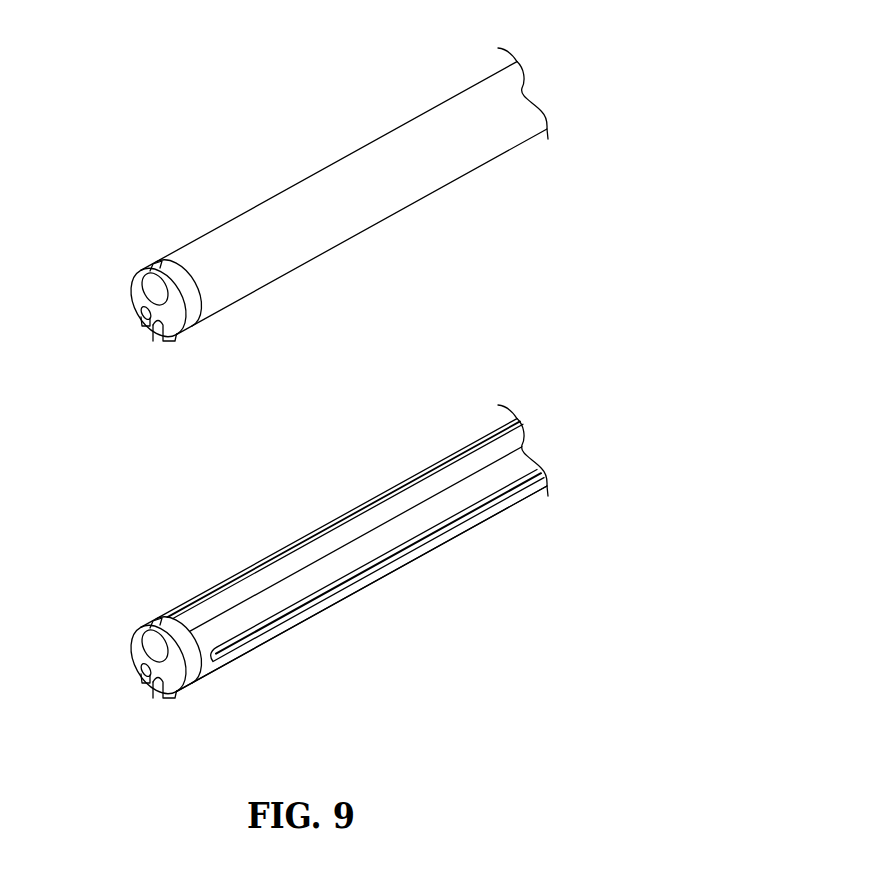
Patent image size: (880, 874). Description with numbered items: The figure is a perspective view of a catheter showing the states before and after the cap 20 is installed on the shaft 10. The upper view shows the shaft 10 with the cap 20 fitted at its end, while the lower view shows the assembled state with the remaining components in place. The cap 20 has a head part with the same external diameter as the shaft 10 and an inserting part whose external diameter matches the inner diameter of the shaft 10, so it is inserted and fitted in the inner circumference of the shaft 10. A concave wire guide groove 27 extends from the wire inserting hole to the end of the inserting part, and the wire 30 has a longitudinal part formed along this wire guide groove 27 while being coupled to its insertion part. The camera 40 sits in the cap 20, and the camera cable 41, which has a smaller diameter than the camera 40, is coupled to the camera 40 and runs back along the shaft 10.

The shaft 10 is at (226, 302).
The cap 20 is at (133, 296).
The wire guide groove 27 is at (230, 662).
The wire 30 is at (283, 628).
The camera 40 is at (155, 288).
The camera cable 41 is at (188, 624).